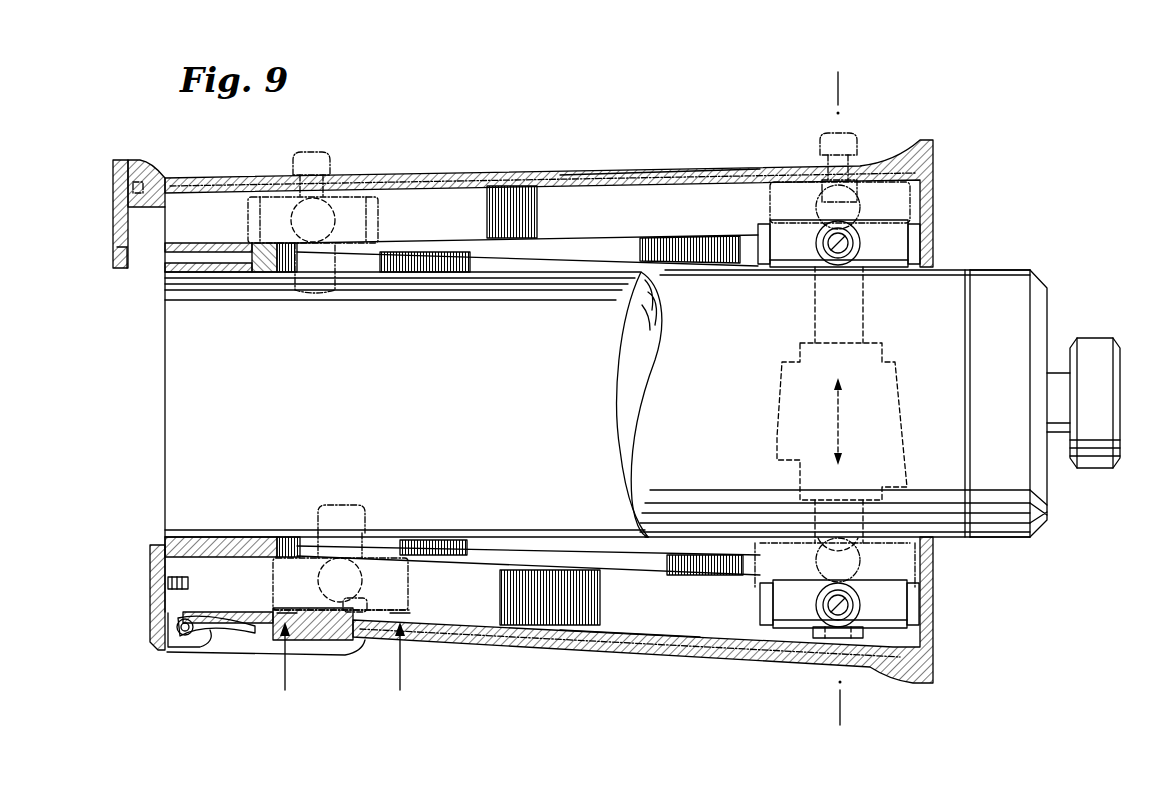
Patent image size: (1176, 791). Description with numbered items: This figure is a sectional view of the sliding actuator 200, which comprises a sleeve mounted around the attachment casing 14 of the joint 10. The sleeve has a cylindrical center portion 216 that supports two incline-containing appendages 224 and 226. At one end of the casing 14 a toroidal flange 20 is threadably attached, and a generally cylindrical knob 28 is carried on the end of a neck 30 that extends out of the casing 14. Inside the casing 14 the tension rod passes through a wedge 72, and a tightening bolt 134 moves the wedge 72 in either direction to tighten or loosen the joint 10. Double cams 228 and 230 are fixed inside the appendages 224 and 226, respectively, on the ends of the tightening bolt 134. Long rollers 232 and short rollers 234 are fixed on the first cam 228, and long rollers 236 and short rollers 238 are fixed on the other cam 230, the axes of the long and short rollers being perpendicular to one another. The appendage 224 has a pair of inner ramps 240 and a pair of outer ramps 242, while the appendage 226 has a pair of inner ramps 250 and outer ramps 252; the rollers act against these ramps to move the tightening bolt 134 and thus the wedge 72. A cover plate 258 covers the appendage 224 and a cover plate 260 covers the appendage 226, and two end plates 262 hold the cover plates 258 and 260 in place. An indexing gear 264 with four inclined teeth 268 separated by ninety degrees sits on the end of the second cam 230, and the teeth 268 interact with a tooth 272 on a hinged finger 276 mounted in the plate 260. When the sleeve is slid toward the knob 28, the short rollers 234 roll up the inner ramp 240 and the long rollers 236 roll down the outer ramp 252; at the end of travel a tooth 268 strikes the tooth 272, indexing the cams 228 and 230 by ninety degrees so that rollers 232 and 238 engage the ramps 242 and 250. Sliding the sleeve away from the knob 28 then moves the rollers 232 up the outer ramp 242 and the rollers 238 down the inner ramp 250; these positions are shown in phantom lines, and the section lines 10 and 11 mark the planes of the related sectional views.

The actuator 200 is at (508, 102).
The cylindrical center portion 216 is at (165, 455).
The cover plate 258 is at (452, 174).
The appendage 224 is at (599, 200).
The appendage 226 is at (603, 645).
The cover plate 260 is at (508, 640).
The end plates 262 is at (113, 232).
The hinged finger 276 is at (238, 632).
The outer ramps 242 is at (470, 303).
The inner ramps 240 is at (592, 258).
The inner ramps 250 is at (528, 552).
The outer ramps 252 is at (604, 572).
The double cam 228 is at (331, 204).
The long rollers 232 is at (912, 244).
The short rollers 234 is at (818, 252).
The tightening bolt 134 is at (855, 309).
The wedge 72 is at (775, 436).
The attachment casing 14 is at (756, 423).
The toroidal flange 20 is at (1007, 483).
The knob 28 is at (1100, 338).
The neck 30 is at (1065, 413).
The double cam 230 is at (347, 568).
The tooth 272 is at (368, 600).
The indexing gear 264 is at (410, 609).
The short rollers 238 is at (958, 600).
The long rollers 236 is at (862, 590).
The inclined teeth 268 is at (848, 634).
The joint 10 is at (852, 710).
The section line 11- 11 is at (341, 655).